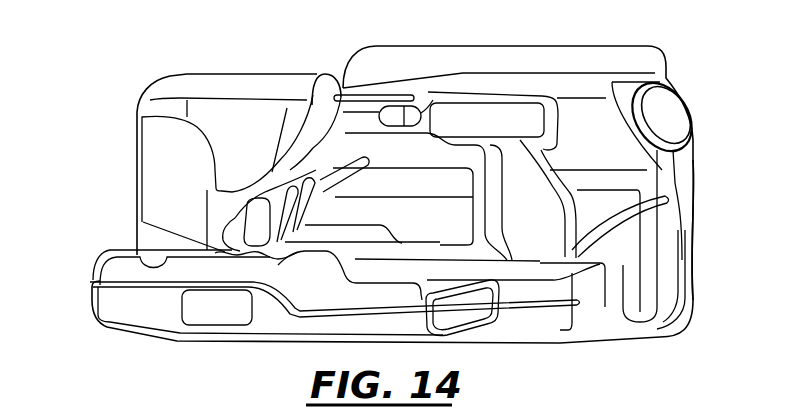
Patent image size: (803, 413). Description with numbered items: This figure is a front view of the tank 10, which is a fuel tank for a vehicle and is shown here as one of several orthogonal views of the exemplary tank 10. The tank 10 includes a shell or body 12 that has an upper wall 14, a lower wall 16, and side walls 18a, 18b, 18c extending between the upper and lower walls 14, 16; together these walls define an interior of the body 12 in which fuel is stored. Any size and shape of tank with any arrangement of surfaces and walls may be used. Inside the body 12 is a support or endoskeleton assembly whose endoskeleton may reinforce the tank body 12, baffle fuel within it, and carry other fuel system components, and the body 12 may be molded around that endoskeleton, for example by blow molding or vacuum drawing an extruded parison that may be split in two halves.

The tank 10 is at (104, 56).
The body 12 is at (240, 46).
The upper wall 14 is at (275, 74).
The lower wall 16 is at (220, 343).
The side wall 18a is at (682, 207).
The side wall 18b is at (137, 180).
The side wall 18c is at (334, 300).